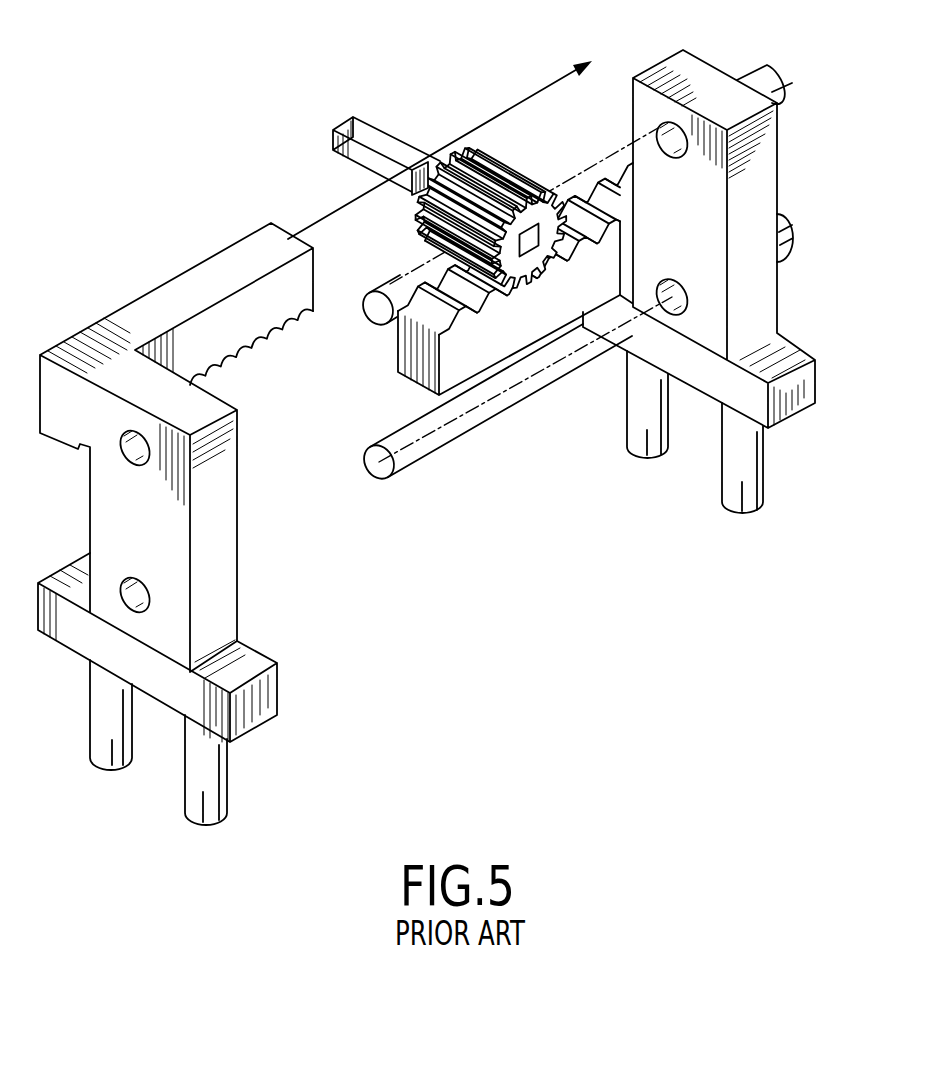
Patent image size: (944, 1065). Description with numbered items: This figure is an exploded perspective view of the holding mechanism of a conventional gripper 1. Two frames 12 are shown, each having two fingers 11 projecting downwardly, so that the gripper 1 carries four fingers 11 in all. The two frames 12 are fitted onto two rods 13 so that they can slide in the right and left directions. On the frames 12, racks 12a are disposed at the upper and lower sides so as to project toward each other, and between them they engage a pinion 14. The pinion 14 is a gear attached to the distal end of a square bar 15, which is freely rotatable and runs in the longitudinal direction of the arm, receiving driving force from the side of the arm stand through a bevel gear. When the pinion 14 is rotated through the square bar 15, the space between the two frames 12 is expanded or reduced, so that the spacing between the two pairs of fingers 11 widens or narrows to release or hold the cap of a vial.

The gripper 1 is at (243, 146).
The fingers 11 is at (203, 802).
The frames 12 is at (213, 553).
The racks 12a is at (418, 288).
The rods 13 is at (593, 163).
The pinion 14 is at (503, 178).
The square bar 15 is at (377, 133).